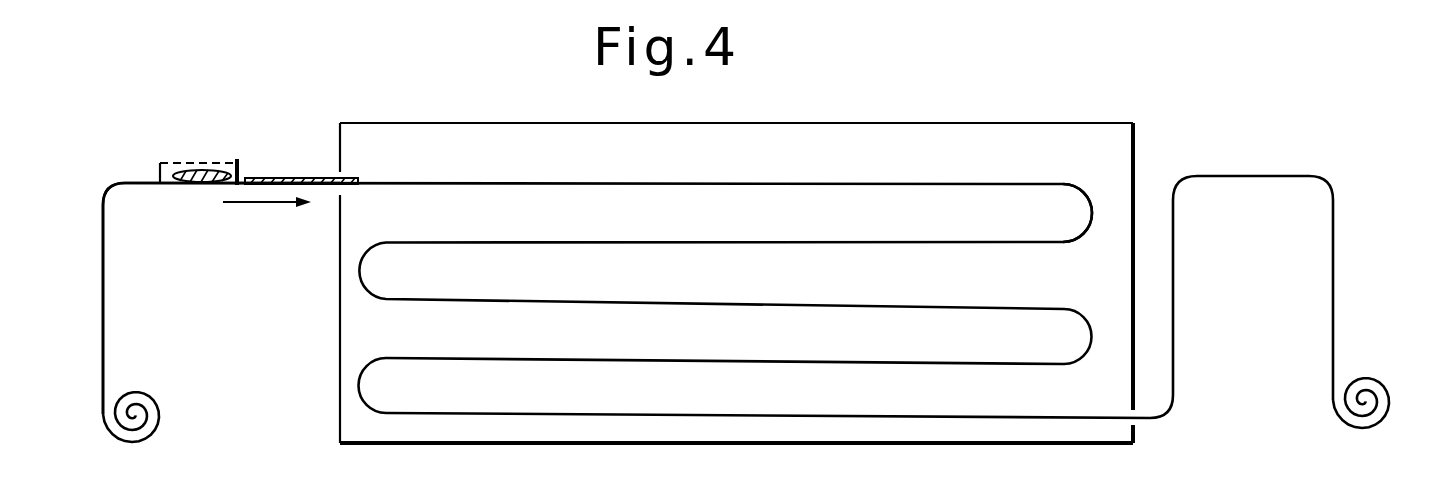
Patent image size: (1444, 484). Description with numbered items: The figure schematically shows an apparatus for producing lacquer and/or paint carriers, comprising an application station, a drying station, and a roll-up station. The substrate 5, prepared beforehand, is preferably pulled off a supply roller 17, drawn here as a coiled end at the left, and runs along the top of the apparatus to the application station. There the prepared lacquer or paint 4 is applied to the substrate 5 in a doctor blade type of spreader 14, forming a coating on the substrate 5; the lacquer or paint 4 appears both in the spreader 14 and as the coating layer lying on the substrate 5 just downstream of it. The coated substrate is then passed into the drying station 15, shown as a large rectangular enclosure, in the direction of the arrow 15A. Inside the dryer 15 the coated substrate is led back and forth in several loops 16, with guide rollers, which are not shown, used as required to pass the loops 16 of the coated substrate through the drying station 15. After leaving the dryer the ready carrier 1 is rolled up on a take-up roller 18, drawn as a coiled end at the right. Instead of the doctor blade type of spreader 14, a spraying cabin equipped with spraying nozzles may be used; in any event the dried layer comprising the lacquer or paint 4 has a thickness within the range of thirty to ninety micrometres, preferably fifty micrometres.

The carrier 1 is at (753, 295).
The lacquer or paint 4 is at (186, 172).
The substrate 5 is at (101, 294).
The doctor blade type of spreader 14 is at (227, 162).
The drying station 15 is at (1005, 118).
The arrow 15A is at (257, 203).
The loops 16 is at (1088, 198).
The supply roller 17 is at (137, 420).
The take-up roller 18 is at (1367, 392).